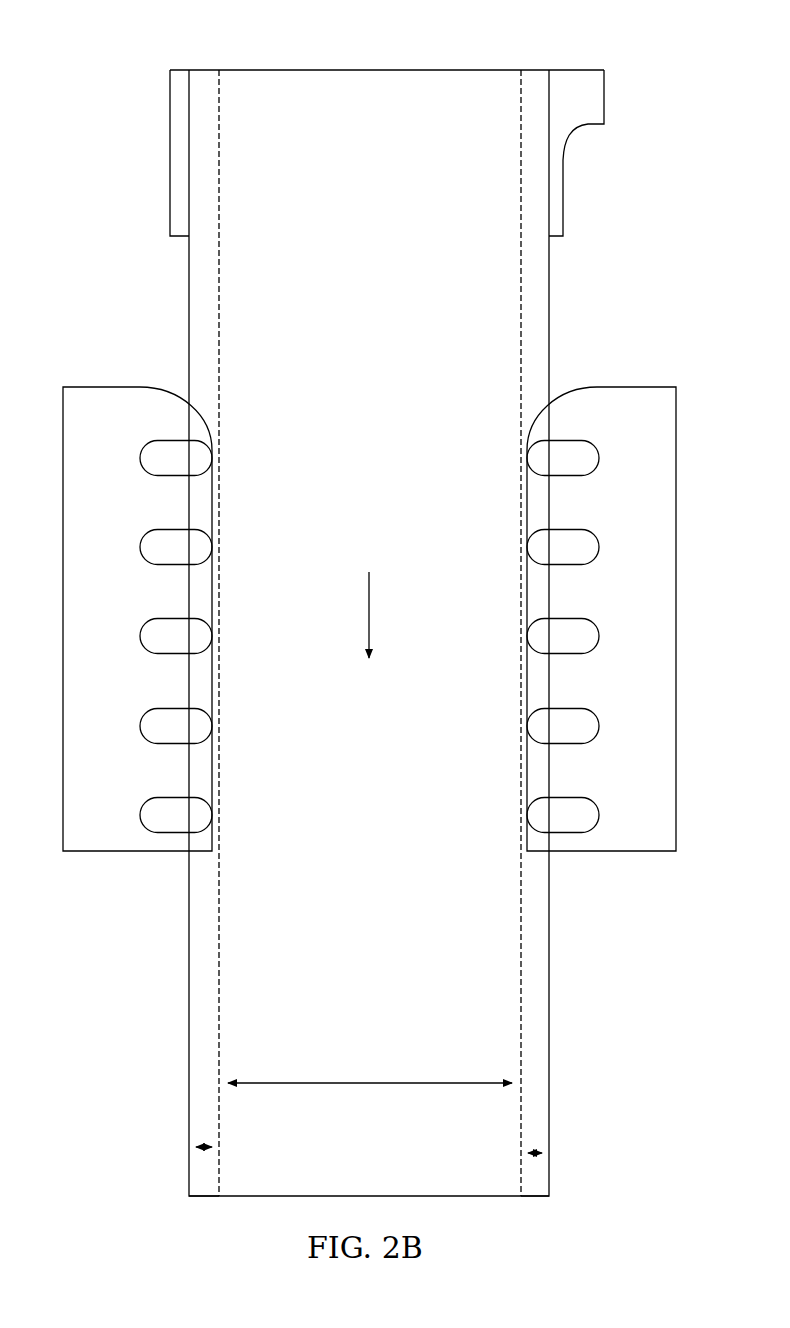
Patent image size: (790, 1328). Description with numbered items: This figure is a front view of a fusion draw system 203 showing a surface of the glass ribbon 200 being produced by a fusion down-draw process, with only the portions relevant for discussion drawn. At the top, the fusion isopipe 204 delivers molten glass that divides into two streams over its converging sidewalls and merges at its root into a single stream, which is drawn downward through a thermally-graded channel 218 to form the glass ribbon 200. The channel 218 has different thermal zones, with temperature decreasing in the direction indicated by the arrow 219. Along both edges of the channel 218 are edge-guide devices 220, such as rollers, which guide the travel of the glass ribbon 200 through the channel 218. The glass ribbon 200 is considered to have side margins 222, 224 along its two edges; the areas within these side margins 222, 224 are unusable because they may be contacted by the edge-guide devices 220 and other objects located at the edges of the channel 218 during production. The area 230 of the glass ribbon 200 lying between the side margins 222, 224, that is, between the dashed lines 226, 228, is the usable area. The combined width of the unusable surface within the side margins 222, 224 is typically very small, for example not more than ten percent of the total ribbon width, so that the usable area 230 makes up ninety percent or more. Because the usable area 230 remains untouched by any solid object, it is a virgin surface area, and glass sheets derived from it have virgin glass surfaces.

The glass ribbon 200 is at (537, 934).
The fusion draw system 203 is at (251, 58).
The fusion isopipe 204 is at (604, 100).
The thermally-graded channel 218 is at (525, 509).
The arrow 219 is at (390, 615).
The edge-guide devices 220 is at (145, 442).
The side margin 222 is at (202, 1150).
The side margin 224 is at (536, 1156).
The dashed line 226 is at (219, 1175).
The dashed line 228 is at (521, 1180).
The usable area 230 is at (366, 1082).